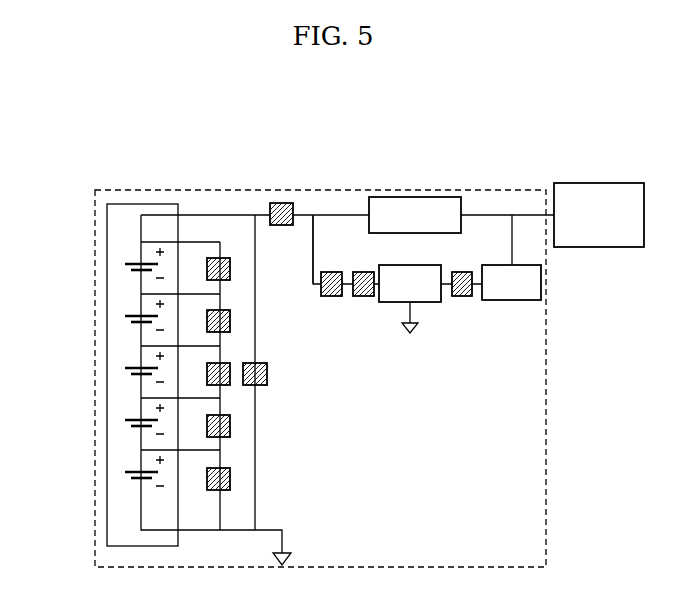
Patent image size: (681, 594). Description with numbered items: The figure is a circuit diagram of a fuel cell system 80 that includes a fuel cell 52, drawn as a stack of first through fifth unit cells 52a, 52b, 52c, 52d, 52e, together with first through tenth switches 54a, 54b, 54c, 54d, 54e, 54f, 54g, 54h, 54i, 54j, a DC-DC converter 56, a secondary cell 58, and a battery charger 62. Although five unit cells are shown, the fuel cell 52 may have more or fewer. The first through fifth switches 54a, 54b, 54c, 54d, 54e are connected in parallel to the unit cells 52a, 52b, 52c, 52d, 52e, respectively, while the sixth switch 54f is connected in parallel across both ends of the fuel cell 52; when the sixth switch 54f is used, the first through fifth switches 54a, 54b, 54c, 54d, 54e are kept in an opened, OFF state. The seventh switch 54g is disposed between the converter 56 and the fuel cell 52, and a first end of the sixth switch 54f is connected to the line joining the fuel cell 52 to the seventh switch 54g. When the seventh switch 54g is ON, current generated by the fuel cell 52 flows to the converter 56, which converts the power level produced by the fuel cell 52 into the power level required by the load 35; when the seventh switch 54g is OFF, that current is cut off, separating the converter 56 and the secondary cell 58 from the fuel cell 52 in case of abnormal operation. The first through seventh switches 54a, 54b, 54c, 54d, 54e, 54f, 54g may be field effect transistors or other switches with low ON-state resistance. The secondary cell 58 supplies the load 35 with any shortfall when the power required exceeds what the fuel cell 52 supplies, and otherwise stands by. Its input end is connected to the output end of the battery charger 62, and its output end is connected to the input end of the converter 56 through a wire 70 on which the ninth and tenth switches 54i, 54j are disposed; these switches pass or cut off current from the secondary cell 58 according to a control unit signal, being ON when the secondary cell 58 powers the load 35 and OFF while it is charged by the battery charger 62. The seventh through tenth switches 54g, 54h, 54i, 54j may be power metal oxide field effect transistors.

The fuel cell system 80 is at (106, 187).
The wire 70 is at (316, 242).
The fuel cell 52 is at (107, 340).
The first unit cell 52a is at (118, 473).
The second unit cell 52b is at (118, 421).
The third unit cell 52c is at (118, 369).
The fourth unit cell 52d is at (118, 318).
The fifth unit cell 52e is at (118, 266).
The first switch 54a is at (230, 480).
The second switch 54b is at (230, 428).
The third switch 54c is at (228, 363).
The fourth switch 54d is at (230, 321).
The fifth switch 54e is at (230, 269).
The sixth switch 54f is at (267, 383).
The seventh switch 54g is at (282, 203).
The eighth switch 54h is at (462, 296).
The ninth switch 54i is at (364, 296).
The tenth switch 54j is at (331, 296).
The DC-DC converter 56 is at (415, 215).
The secondary cell 58 is at (410, 283).
The battery charger 62 is at (511, 282).
The load 35 is at (599, 215).